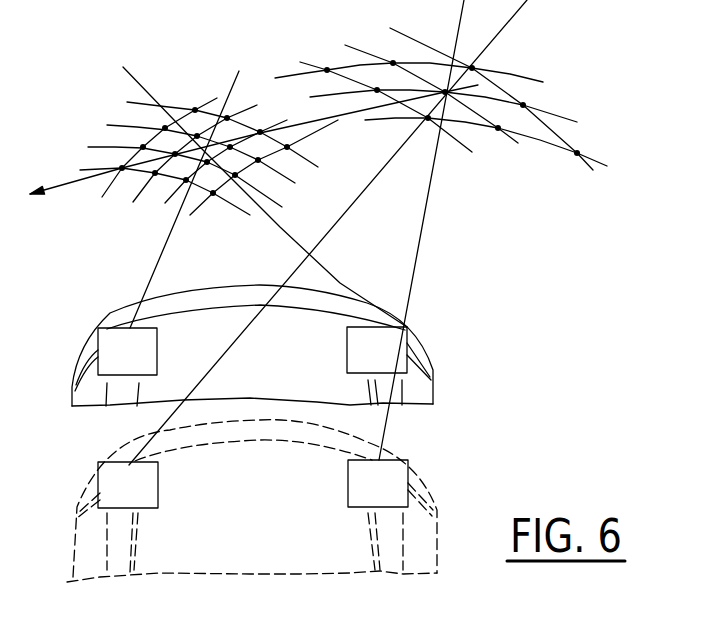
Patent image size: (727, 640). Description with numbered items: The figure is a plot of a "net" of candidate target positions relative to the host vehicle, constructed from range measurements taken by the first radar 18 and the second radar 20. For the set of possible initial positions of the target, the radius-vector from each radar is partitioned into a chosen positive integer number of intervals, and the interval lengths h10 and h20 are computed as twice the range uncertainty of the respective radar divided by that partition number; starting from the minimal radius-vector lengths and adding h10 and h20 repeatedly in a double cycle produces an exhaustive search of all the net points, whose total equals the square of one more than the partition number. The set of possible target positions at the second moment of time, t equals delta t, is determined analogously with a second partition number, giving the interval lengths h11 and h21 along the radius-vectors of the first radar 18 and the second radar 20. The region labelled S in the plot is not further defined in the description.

The first radar 18 is at (97, 343).
The second radar 20 is at (407, 338).
The spherical surface S is at (433, 380).
The partition interval length along radius-vector R10 h10 is at (403, 35).
The partition interval length along radius-vector R11 h11 is at (135, 123).
The partition interval length along radius-vector R20 h20 is at (542, 108).
The partition interval length along radius-vector R21 h21 is at (135, 193).